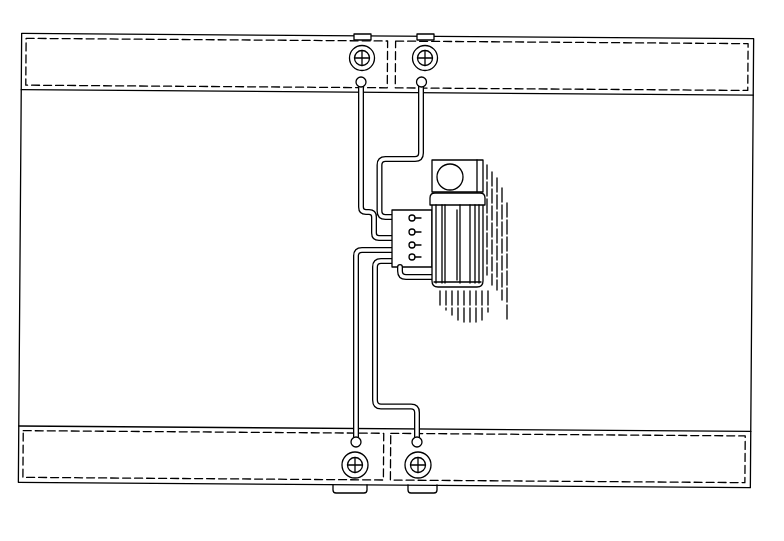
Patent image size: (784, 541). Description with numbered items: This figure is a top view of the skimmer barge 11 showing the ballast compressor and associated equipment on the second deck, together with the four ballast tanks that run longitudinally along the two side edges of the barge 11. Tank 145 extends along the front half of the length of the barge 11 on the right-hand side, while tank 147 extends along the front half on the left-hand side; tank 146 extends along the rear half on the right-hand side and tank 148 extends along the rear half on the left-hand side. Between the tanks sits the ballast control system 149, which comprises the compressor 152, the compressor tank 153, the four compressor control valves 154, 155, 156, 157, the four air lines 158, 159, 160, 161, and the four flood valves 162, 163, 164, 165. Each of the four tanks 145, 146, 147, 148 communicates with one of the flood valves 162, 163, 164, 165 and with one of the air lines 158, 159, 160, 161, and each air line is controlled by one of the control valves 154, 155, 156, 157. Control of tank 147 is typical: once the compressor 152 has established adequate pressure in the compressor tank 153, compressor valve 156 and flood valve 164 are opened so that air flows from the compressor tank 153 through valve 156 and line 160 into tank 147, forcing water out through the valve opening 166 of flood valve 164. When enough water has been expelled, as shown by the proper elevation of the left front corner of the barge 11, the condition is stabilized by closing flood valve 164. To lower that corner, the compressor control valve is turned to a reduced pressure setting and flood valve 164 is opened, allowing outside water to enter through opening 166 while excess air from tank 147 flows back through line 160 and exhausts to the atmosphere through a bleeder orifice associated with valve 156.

The barge 11 is at (734, 368).
The ballast tank 145 is at (213, 76).
The ballast tank 146 is at (607, 80).
The ballast tank 147 is at (189, 466).
The ballast tank 148 is at (587, 470).
The ballast control system 149 is at (356, 232).
The compressor 152 is at (476, 176).
The compressor tank 153 is at (483, 270).
The compressor control valve 154 is at (411, 215).
The compressor control valve 155 is at (409, 232).
The compressor control valve 156 is at (409, 245).
The compressor control valve 157 is at (409, 258).
The air line 158 is at (358, 112).
The air line 159 is at (425, 112).
The air line 160 is at (354, 350).
The air line 161 is at (378, 352).
The flood valve 162 is at (363, 33).
The flood valve 163 is at (426, 33).
The flood valve 164 is at (345, 460).
The flood valve 165 is at (437, 486).
The valve opening 166 is at (340, 489).